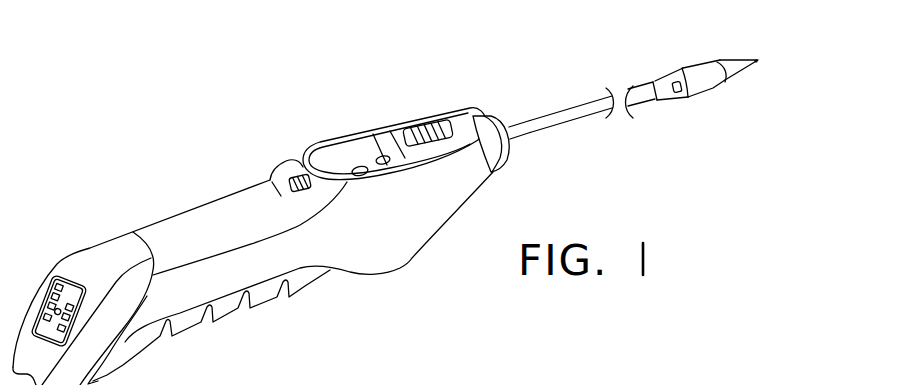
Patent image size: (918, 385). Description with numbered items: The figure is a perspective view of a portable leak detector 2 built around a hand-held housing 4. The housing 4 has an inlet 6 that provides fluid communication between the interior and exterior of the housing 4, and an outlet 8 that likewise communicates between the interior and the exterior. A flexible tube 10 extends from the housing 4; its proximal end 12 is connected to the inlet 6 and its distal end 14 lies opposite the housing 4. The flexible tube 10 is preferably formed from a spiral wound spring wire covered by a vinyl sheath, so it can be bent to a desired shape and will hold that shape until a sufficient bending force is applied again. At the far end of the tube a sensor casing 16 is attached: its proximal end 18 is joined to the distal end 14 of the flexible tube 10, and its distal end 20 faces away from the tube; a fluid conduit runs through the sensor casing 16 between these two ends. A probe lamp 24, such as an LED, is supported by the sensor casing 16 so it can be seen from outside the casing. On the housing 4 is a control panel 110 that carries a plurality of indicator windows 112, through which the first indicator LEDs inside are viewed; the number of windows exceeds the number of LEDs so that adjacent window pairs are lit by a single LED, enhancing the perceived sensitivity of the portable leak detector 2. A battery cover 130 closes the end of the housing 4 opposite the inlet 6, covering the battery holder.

The portable leak detector 2 is at (173, 132).
The housing 4 is at (390, 238).
The inlet 6 is at (517, 142).
The outlet 8 is at (291, 163).
The flexible tube 10 is at (555, 110).
The proximal end 12 is at (517, 123).
The distal end 14 is at (643, 82).
The sensor casing 16 is at (712, 88).
The proximal end 18 is at (652, 100).
The distal end 20 is at (760, 60).
The probe lamp 24 is at (678, 68).
The control panel 110 is at (400, 113).
The indicator windows 112 is at (697, 380).
The battery cover 130 is at (42, 268).